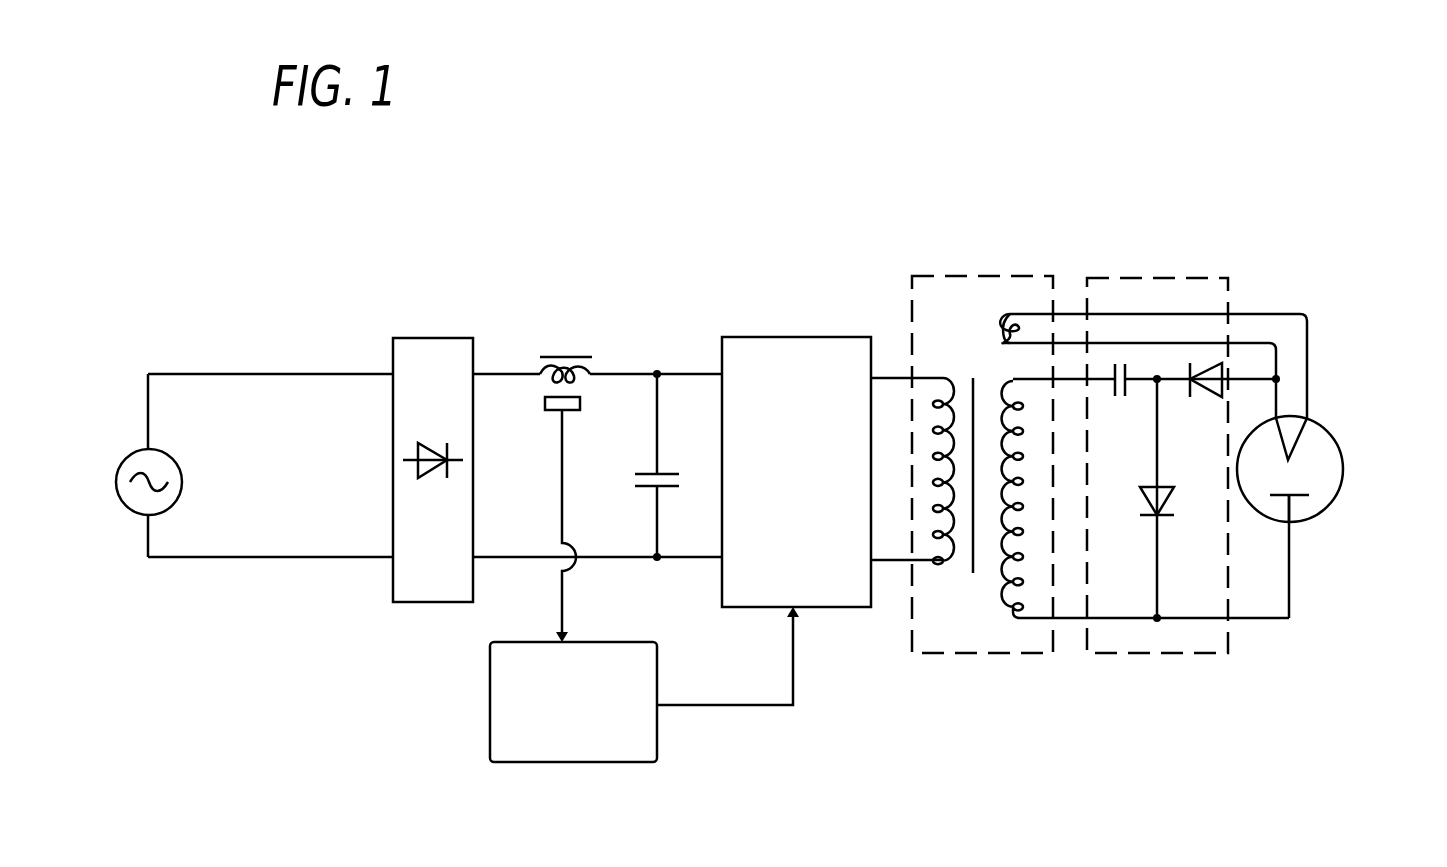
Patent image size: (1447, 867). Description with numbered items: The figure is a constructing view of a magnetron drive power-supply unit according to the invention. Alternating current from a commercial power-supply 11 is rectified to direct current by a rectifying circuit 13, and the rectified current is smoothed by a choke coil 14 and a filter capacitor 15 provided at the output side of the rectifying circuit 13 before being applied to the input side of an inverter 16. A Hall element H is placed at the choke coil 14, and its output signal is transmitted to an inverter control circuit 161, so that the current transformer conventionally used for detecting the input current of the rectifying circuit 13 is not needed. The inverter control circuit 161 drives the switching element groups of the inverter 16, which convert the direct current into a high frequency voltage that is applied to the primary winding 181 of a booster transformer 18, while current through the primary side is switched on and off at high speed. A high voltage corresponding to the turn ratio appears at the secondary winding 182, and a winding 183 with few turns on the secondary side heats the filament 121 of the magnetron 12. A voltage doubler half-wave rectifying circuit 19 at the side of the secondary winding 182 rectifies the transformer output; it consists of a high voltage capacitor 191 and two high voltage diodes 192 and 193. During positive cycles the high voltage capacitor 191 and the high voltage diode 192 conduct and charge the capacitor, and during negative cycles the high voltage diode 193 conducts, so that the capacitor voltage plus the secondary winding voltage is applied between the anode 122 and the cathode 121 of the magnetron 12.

The commercial power-supply 11 is at (182, 482).
The magnetron 12 is at (1341, 483).
The filament 121 is at (1298, 447).
The anode 122 is at (1300, 498).
The rectifying circuit 13 is at (433, 338).
The choke coil 14 is at (563, 357).
The Hall element H is at (580, 403).
The filter capacitor 15 is at (650, 488).
The inverter 16 is at (795, 337).
The inverter control circuit 161 is at (572, 762).
The booster transformer 18 is at (912, 276).
The primary winding 181 is at (940, 380).
The secondary winding 182 is at (1000, 388).
The winding 183 is at (1005, 314).
The voltage doubler half-wave rectifying circuit 19 is at (1190, 278).
The high voltage capacitor 191 is at (1125, 364).
The high voltage diode 192 is at (1140, 490).
The high voltage diode 193 is at (1220, 372).